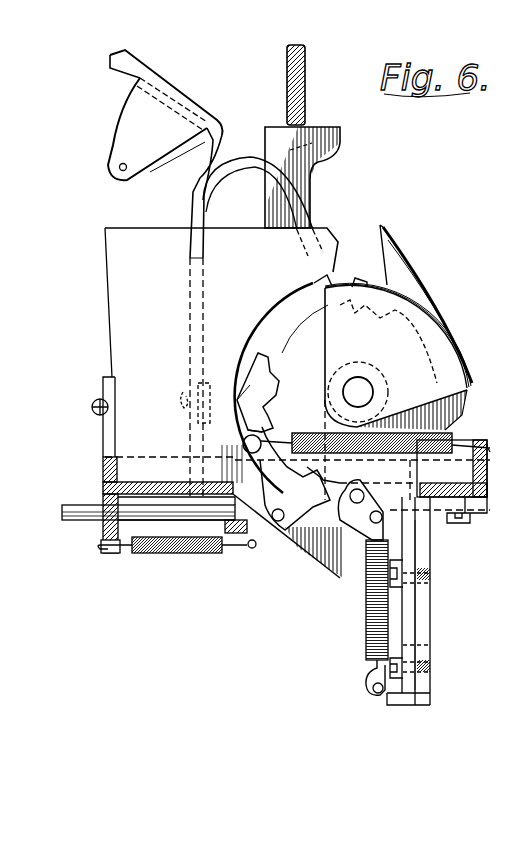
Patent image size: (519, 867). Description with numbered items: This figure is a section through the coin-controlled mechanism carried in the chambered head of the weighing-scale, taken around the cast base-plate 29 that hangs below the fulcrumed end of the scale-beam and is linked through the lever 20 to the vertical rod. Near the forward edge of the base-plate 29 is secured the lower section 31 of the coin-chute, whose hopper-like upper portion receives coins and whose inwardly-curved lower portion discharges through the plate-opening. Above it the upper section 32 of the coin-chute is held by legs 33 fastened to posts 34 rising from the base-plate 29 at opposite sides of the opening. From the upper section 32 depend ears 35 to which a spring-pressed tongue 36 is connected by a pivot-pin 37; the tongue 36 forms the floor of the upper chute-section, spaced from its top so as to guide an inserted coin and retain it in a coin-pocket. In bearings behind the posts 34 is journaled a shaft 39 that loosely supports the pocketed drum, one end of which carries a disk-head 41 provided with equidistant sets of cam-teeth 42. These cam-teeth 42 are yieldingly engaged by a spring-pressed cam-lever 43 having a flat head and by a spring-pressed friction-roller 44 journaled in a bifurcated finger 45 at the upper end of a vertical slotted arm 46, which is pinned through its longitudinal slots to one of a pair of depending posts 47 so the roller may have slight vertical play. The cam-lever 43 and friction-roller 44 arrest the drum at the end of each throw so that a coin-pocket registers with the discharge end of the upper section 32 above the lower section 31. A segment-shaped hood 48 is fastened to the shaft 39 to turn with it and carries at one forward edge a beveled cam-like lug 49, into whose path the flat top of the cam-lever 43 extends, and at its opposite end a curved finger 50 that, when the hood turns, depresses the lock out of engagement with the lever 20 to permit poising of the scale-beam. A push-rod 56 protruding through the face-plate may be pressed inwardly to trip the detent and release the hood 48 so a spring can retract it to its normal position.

The lever 20 is at (287, 64).
The base-plate 29 is at (172, 470).
The lower section of coin-chute 31 is at (345, 176).
The upper section of coin-chute 32 is at (203, 87).
The legs 33 is at (196, 247).
The posts 34 is at (200, 445).
The ears 35 is at (135, 145).
The spring-pressed tongue 36 is at (250, 180).
The pivot-pin 37 is at (119, 169).
The shaft 39 is at (358, 392).
The disk-head 41 is at (315, 333).
The cam-teeth 42 is at (400, 303).
The cam-lever 43 is at (250, 385).
The friction-roller 44 is at (362, 461).
The bifurcated finger 45 is at (366, 540).
The vertical slotted arm 46 is at (410, 618).
The post 47 is at (420, 650).
The segment-shaped hood 48 is at (448, 337).
The beveled or cam-like lug 49 is at (358, 288).
The curved finger 50 is at (396, 248).
The push-rod 56 is at (82, 507).